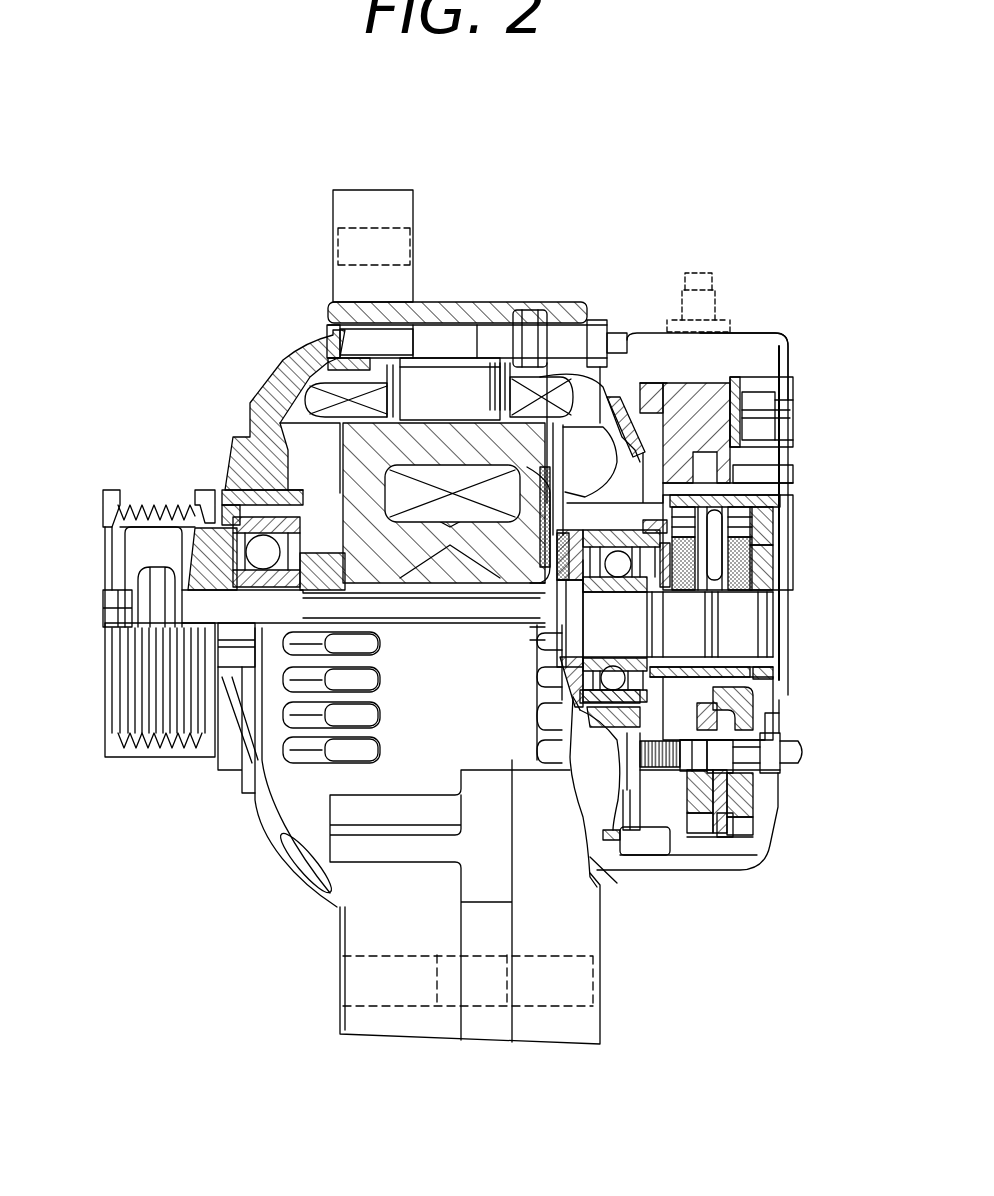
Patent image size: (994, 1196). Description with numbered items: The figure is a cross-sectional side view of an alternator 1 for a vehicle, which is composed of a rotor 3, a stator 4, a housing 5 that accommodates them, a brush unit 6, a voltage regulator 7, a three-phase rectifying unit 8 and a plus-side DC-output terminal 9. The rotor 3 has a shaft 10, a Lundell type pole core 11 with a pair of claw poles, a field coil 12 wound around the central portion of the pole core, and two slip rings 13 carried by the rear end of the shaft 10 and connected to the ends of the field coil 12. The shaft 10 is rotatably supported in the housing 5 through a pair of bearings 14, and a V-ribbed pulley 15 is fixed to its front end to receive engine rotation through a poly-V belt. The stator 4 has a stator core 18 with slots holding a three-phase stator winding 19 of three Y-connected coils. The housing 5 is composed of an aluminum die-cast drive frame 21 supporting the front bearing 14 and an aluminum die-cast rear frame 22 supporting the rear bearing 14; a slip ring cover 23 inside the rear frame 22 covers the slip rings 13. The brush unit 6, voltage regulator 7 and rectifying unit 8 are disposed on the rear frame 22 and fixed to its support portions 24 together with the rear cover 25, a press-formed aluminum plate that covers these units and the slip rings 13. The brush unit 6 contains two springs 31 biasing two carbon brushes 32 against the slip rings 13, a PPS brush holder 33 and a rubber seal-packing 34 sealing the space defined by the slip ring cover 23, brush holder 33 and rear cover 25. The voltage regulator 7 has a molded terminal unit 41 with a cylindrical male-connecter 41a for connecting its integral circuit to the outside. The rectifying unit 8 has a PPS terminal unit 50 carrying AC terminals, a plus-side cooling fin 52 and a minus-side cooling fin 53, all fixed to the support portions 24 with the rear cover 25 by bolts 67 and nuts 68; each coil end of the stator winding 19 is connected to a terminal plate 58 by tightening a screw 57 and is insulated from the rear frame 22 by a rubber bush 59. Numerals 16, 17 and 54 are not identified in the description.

The alternator 1 is at (167, 166).
The rotor 3 is at (590, 390).
The stator 4 is at (328, 430).
The housing 5 is at (330, 923).
The brush unit 6 is at (745, 492).
The voltage regulator 7 is at (745, 368).
The three-phase rectifying unit 8 is at (755, 829).
The plus-side DC-output terminal 9 is at (703, 268).
The shaft 10 is at (200, 612).
The Lundell type pole core 11 is at (420, 560).
The field coil 12 is at (480, 505).
The slip rings 13 is at (687, 630).
The bearings 14 is at (220, 517).
The V-ribbed pulley 15 is at (150, 742).
The stator 16 is at (265, 385).
The air passage 17 is at (587, 445).
The stator core 18 is at (450, 380).
The three-phase stator winding 19 is at (343, 397).
The drive frame 21 is at (263, 430).
The rear frame 22 is at (555, 300).
The slip ring cover 23 is at (780, 678).
The support portions 24 is at (663, 780).
The rear cover 25 is at (760, 335).
The springs 31 is at (770, 522).
The carbon brushes 32 is at (683, 562).
The brush holder 33 is at (750, 478).
The seal-packing 34 is at (778, 580).
The terminal unit 41 is at (690, 410).
The cylindrical male-connecter 41a is at (770, 378).
The terminal unit 50 is at (690, 820).
The plus-side cooling fin 52 is at (763, 723).
The minus-side cooling fin 53 is at (757, 710).
The output terminal bolt 54 is at (720, 285).
The screw 57 is at (728, 847).
The terminal plate 58 is at (742, 825).
The rubber bush 59 is at (633, 843).
The bolts 67 is at (807, 747).
The nuts 68 is at (787, 765).